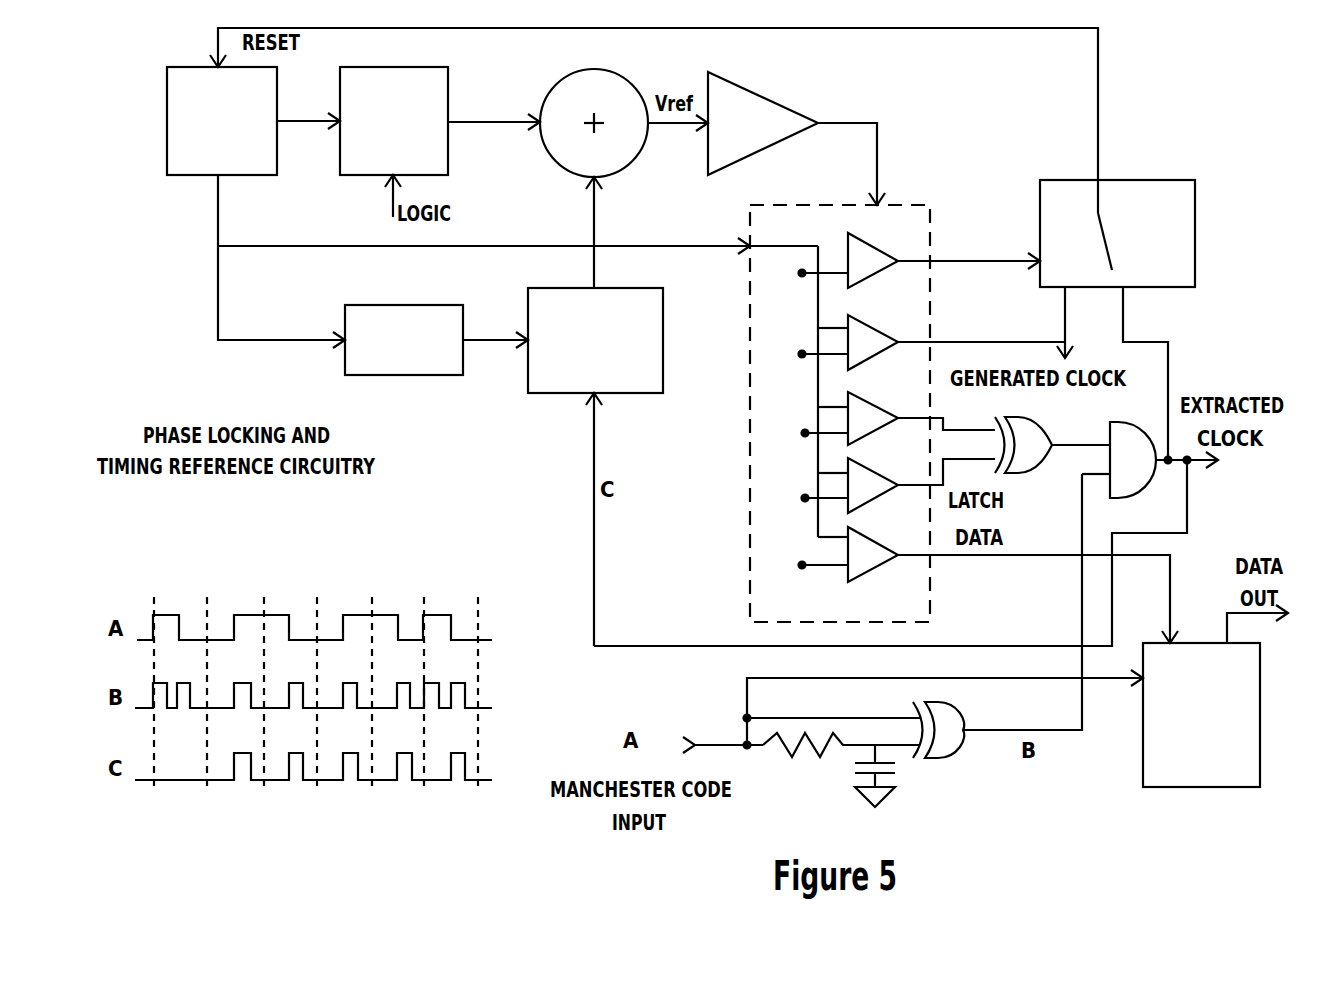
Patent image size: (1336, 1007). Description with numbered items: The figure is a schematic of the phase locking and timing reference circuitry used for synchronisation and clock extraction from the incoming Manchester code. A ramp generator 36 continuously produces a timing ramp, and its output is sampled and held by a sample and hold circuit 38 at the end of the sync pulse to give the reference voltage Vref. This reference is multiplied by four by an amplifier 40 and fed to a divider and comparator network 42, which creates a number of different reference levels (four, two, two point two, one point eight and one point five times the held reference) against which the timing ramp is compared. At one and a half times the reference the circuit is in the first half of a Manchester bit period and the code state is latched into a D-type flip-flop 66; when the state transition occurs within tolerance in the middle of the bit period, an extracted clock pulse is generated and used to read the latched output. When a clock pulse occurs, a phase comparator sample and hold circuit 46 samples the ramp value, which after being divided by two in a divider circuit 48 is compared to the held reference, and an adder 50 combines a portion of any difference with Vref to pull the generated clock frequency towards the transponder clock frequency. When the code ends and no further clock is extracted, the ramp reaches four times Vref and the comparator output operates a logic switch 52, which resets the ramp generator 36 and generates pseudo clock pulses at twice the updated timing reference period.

The ramp generator 36 is at (173, 83).
The sample and hold circuit 38 is at (445, 80).
The amplifier 40 is at (743, 92).
The divider and comparator network 42 is at (905, 210).
The phase comparator sample and hold circuit 46 is at (628, 297).
The divider circuit 48 is at (417, 307).
The adder 50 is at (617, 78).
The logic switch 52 is at (1135, 187).
The D-type flip-flop 66 is at (1250, 757).